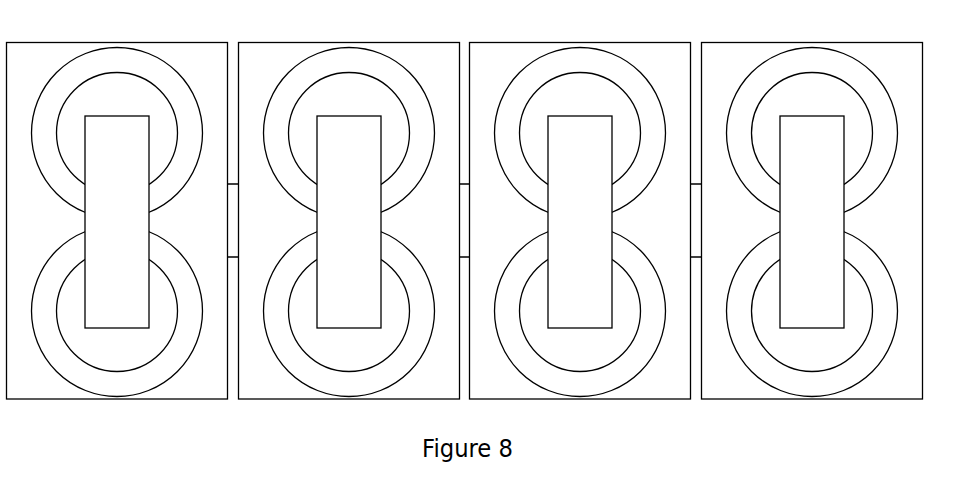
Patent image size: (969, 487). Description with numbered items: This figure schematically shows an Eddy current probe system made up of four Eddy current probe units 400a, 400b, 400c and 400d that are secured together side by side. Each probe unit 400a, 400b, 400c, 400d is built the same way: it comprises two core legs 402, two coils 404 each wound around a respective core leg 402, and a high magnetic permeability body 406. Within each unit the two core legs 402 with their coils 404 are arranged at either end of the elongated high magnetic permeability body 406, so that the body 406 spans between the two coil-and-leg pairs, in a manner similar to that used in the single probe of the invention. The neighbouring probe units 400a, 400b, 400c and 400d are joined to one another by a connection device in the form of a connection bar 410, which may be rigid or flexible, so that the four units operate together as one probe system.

The Eddy current probe unit 400a is at (110, 42).
The Eddy current probe unit 400b is at (342, 42).
The Eddy current probe unit 400c is at (573, 42).
The Eddy current probe unit 400d is at (805, 42).
The core leg 402 is at (137, 113).
The coil 404 is at (166, 66).
The high magnetic permeability body 406 is at (137, 234).
The connection bar 410 is at (240, 232).